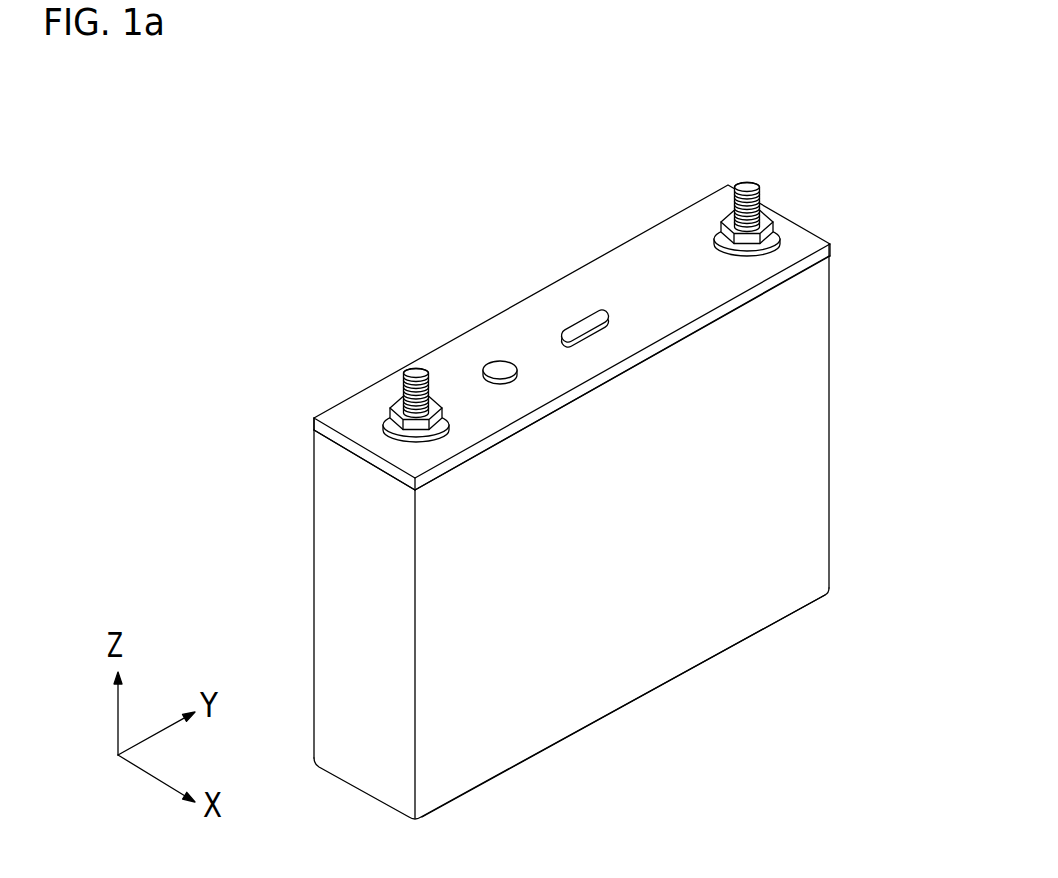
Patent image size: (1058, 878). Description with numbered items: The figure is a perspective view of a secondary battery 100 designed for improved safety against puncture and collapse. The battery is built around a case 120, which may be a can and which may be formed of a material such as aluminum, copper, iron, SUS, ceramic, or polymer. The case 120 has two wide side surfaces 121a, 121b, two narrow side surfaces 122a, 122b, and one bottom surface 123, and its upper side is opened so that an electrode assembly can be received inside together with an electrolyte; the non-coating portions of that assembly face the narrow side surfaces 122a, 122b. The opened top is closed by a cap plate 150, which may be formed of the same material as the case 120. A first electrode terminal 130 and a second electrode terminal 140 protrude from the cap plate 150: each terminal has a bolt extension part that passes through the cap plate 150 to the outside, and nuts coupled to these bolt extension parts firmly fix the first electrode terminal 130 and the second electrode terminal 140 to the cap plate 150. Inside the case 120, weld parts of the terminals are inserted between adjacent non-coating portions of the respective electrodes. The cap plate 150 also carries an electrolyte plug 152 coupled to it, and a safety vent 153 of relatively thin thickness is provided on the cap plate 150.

The secondary battery 100 is at (412, 166).
The case 120 is at (844, 478).
The wide side surface 121a is at (443, 533).
The wide side surface 121b is at (313, 490).
The narrow side surface 122a is at (832, 330).
The narrow side surface 122b is at (340, 612).
The bottom surface 123 is at (625, 707).
The first electrode terminal 130 is at (767, 170).
The second electrode terminal 140 is at (392, 352).
The cap plate 150 is at (648, 245).
The electrolyte plug 152 is at (497, 365).
The safety vent 153 is at (582, 328).